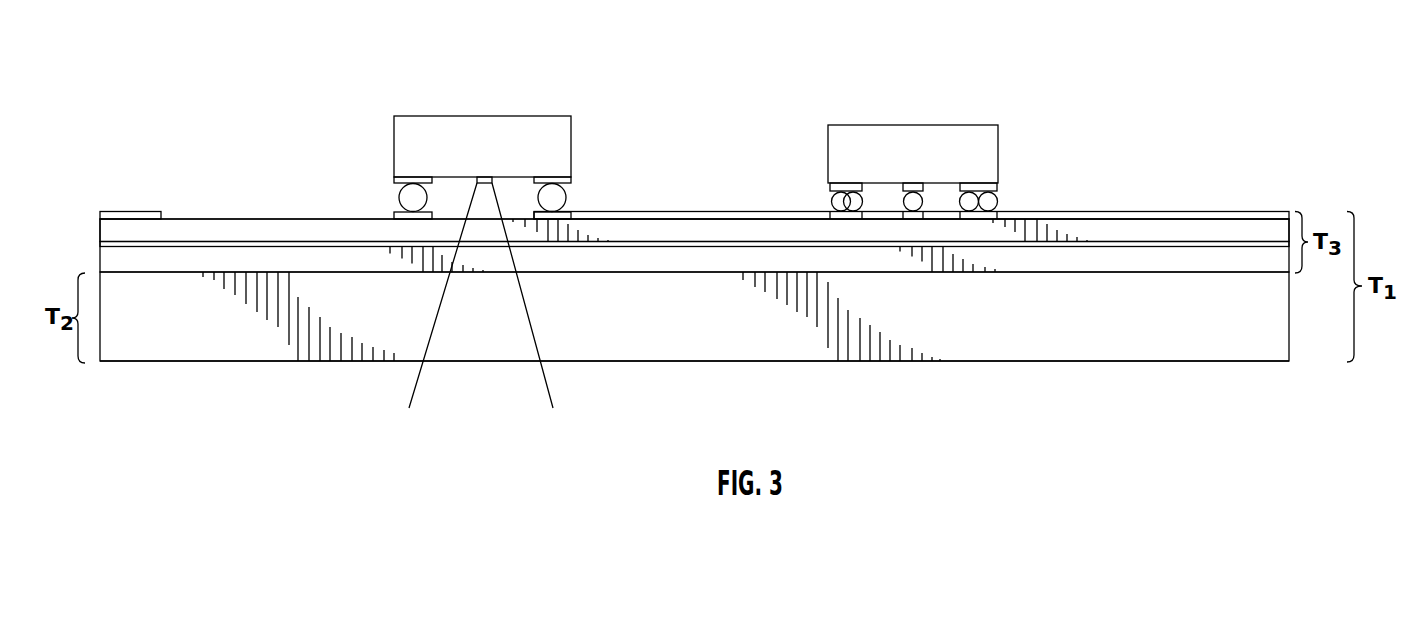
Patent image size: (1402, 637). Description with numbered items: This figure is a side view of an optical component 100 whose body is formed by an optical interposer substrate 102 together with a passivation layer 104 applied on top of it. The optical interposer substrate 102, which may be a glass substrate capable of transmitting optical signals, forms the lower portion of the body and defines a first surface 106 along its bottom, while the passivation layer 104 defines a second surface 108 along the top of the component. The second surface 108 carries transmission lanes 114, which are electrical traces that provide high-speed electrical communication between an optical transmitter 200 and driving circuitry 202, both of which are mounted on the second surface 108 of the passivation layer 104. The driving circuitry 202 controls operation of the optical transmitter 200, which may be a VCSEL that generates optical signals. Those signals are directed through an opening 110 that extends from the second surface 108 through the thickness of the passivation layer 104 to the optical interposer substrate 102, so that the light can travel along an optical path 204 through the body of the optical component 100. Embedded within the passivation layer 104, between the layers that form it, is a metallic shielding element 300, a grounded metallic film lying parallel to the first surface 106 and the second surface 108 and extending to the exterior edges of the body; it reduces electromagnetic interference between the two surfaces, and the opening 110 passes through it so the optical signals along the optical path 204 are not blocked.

The optical component 100 is at (109, 73).
The optical interposer substrate 102 is at (943, 342).
The passivation layer 104 is at (149, 260).
The first surface 106 is at (768, 366).
The second surface 108 is at (340, 213).
The opening 110 is at (482, 214).
The transmission lanes 114 is at (737, 217).
The optical transmitter 200 is at (560, 145).
The driving circuitry 202 is at (993, 150).
The optical path 204 is at (548, 384).
The metallic shielding element 300 is at (100, 243).